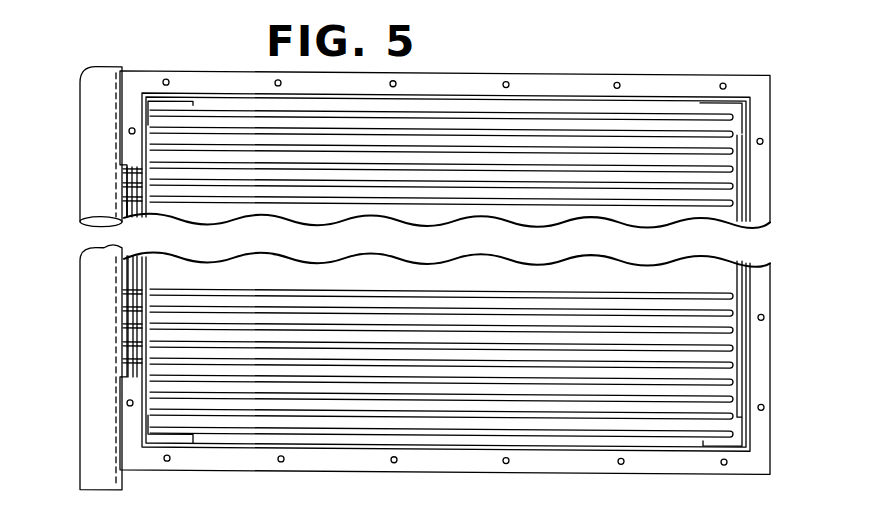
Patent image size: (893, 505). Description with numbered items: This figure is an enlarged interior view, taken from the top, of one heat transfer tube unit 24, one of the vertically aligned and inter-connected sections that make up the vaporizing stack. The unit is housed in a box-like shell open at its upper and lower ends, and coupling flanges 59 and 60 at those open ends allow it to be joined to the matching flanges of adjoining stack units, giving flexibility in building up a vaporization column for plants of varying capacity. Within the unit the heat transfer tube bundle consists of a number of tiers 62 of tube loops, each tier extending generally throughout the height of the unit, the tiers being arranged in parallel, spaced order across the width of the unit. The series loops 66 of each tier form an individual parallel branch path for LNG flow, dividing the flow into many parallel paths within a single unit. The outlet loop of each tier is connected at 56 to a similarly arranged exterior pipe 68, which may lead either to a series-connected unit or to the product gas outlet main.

The heat transfer tube unit 24 is at (772, 97).
The outlet loop connection 56 is at (124, 184).
The coupling flange 59 is at (698, 96).
The coupling flange 60 is at (136, 219).
The tiers of tube loops 62 is at (550, 146).
The series loops 66 is at (734, 327).
The exterior pipe 68 is at (90, 110).